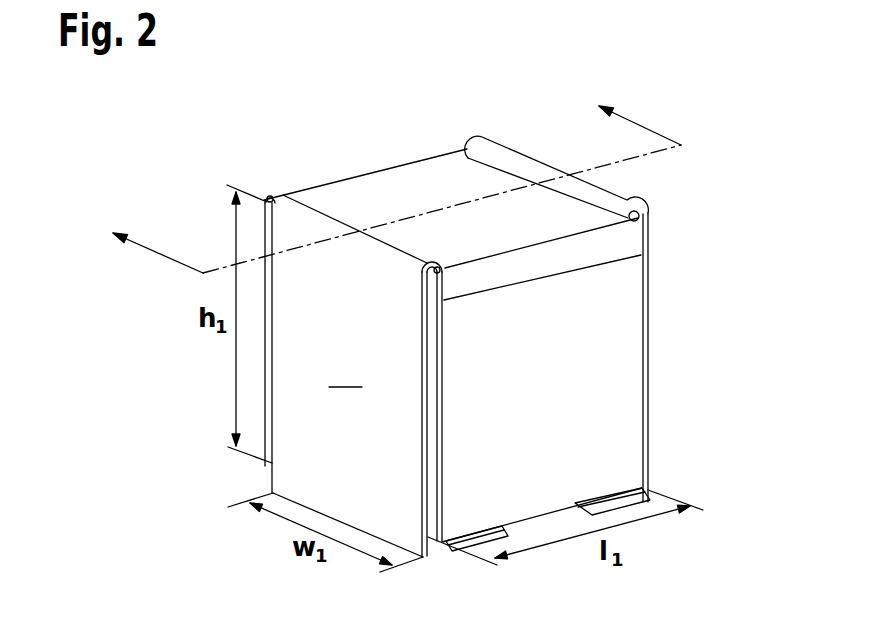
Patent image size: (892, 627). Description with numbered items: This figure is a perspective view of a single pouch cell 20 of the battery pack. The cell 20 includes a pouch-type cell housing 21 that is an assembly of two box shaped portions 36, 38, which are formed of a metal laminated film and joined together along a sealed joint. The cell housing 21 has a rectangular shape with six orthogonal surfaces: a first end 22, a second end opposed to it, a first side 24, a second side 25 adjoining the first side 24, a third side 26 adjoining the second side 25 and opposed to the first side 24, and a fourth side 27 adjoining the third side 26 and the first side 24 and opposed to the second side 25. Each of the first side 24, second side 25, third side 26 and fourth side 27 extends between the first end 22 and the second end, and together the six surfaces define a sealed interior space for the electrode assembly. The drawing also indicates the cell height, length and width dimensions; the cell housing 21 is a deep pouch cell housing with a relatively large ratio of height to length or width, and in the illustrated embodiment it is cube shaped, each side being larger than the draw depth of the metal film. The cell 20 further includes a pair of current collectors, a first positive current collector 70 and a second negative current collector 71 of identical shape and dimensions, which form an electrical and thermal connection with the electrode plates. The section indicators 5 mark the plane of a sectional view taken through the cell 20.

The section line 5- 5 is at (384, 178).
The cell 20 is at (243, 146).
The cell housing 21 is at (557, 210).
The first end 22 is at (363, 187).
The first side 24 is at (270, 407).
The second side 25 is at (623, 427).
The third side 26 is at (643, 378).
The fourth side 27 is at (265, 370).
The box shaped portion 36 is at (620, 237).
The box shaped portion 38 is at (621, 288).
The first current collector 70 is at (350, 376).
The second current collector 71 is at (650, 331).